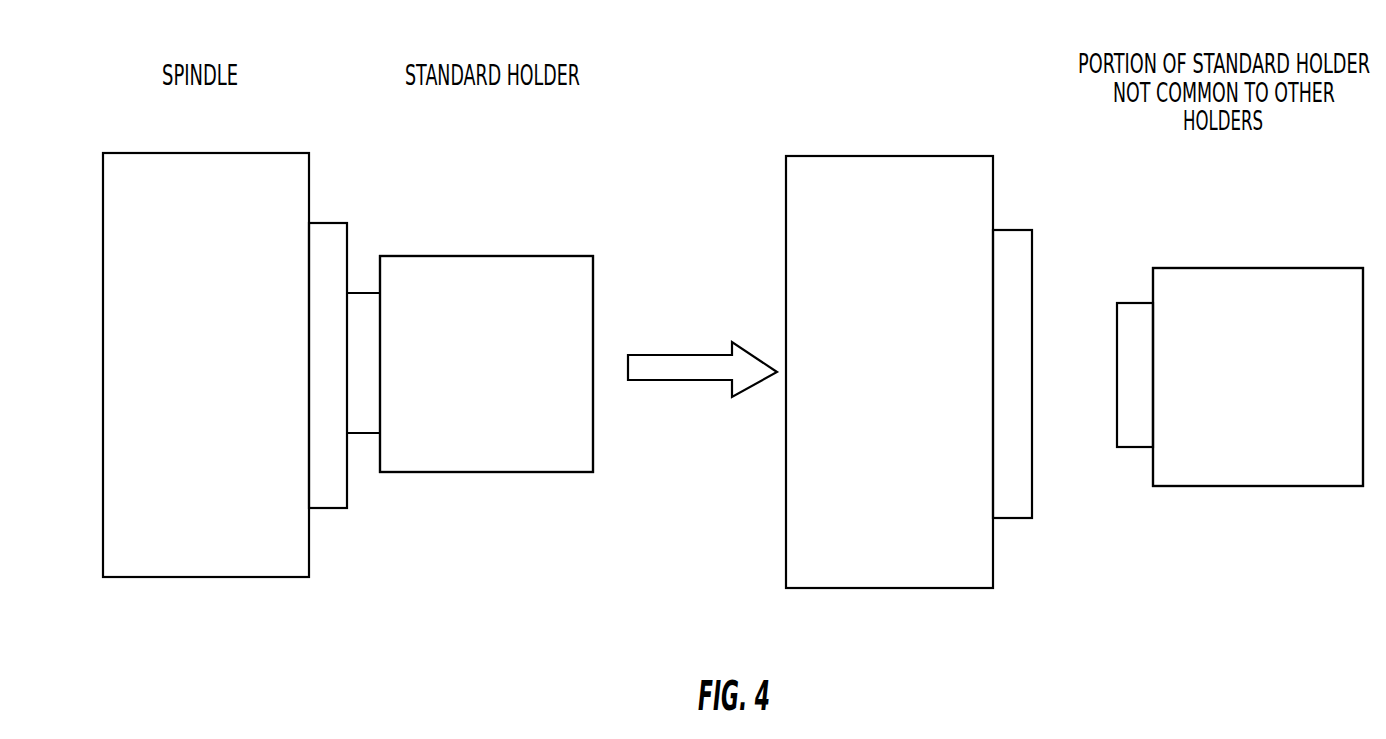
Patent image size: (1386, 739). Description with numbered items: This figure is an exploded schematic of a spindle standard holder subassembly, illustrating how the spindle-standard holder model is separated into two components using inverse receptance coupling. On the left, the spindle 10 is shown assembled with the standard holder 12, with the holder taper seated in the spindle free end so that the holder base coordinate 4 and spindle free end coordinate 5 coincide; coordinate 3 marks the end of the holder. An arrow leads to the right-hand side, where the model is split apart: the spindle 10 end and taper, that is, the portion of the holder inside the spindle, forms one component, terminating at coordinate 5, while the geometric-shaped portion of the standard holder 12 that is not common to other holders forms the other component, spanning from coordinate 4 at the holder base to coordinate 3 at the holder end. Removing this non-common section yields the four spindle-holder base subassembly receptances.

The spindle 10 is at (548, 370).
The standard holder 12 is at (871, 371).
The coordinate 3 is at (875, 392).
The coordinate 5 is at (1008, 434).
The coordinate 4 is at (1137, 416).